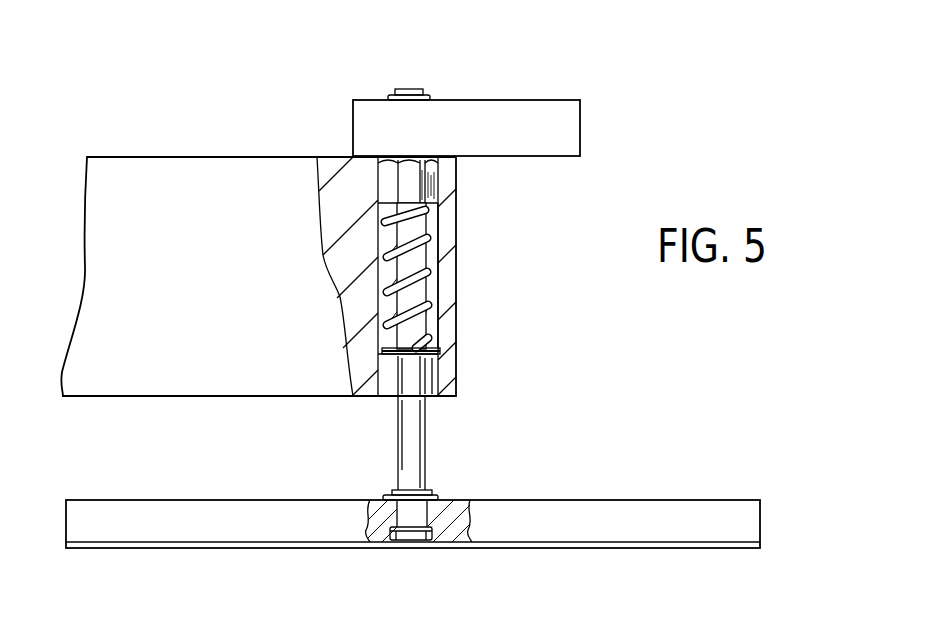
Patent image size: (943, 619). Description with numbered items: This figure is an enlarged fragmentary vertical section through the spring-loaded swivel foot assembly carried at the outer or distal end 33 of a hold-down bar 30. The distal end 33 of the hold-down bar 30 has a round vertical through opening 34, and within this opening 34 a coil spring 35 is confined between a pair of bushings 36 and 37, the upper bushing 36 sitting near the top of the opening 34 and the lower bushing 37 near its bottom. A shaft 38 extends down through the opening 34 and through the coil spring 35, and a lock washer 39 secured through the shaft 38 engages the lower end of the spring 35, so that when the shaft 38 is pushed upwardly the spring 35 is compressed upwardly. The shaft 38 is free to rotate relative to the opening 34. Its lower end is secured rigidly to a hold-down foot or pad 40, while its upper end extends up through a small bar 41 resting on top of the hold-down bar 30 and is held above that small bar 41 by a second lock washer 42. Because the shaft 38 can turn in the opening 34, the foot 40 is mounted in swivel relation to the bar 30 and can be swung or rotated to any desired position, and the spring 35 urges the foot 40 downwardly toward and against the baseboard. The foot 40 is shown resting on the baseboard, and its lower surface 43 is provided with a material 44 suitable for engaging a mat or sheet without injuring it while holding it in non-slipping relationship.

The hold-down bar 30 is at (216, 349).
The outer or distal end 33 is at (457, 209).
The round vertical through opening 34 is at (440, 289).
The coil spring 35 is at (432, 260).
The bushing 36 is at (437, 196).
The bushing 37 is at (436, 381).
The shaft 38 is at (401, 89).
The lock washer 39 is at (440, 352).
The hold-down foot or pad 40 is at (457, 500).
The small bar 41 is at (527, 134).
The lock washer 42 is at (433, 95).
The lower surface 43 is at (566, 547).
The material 44 is at (602, 549).